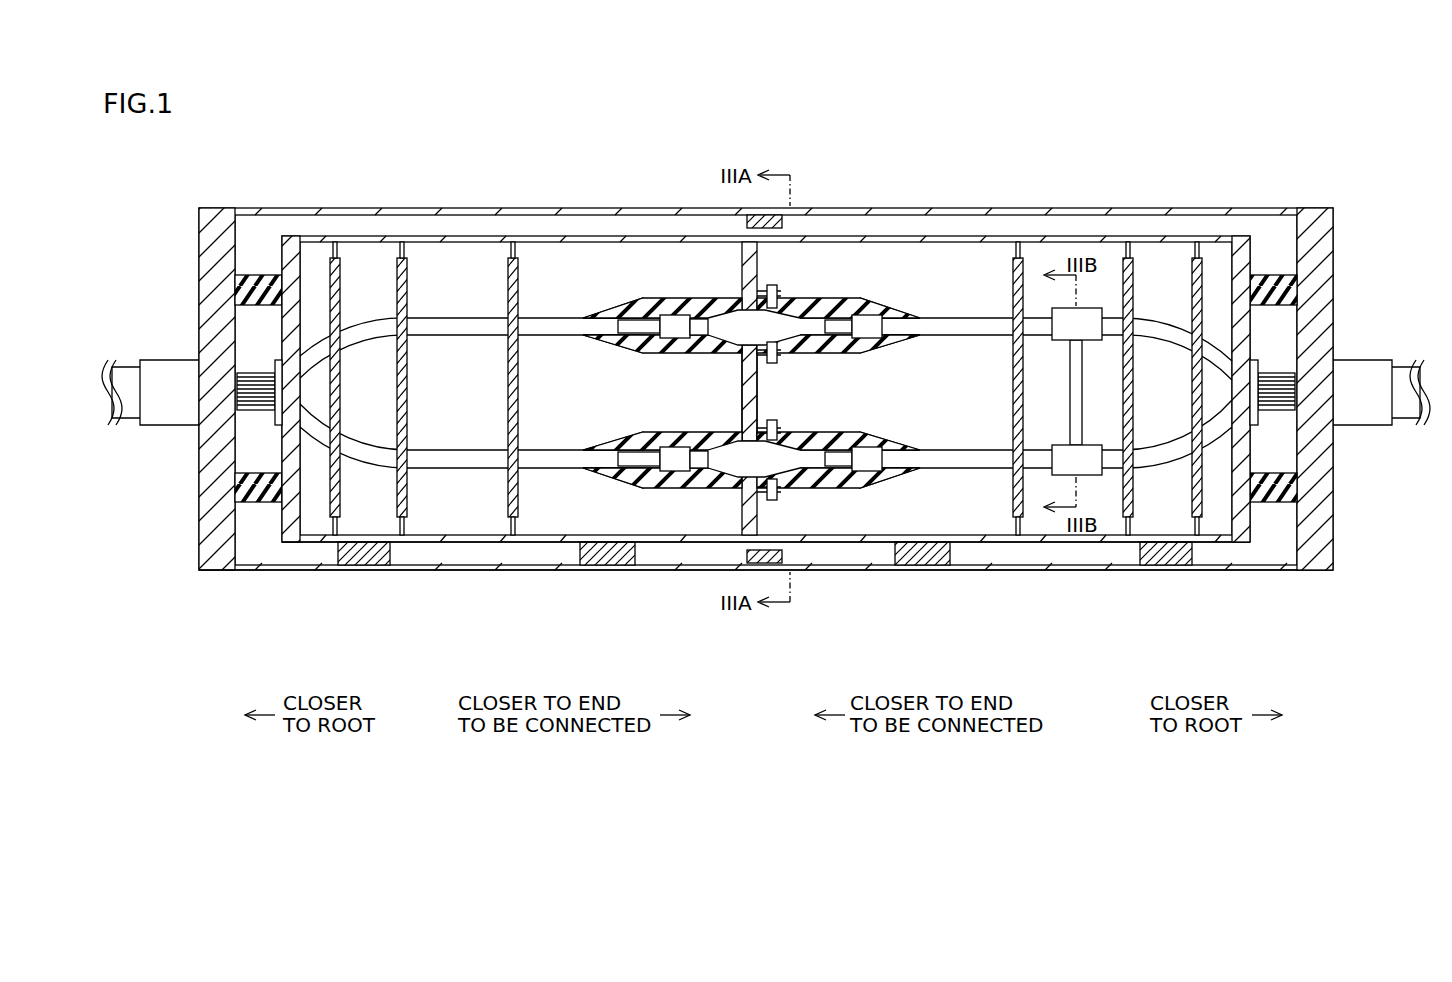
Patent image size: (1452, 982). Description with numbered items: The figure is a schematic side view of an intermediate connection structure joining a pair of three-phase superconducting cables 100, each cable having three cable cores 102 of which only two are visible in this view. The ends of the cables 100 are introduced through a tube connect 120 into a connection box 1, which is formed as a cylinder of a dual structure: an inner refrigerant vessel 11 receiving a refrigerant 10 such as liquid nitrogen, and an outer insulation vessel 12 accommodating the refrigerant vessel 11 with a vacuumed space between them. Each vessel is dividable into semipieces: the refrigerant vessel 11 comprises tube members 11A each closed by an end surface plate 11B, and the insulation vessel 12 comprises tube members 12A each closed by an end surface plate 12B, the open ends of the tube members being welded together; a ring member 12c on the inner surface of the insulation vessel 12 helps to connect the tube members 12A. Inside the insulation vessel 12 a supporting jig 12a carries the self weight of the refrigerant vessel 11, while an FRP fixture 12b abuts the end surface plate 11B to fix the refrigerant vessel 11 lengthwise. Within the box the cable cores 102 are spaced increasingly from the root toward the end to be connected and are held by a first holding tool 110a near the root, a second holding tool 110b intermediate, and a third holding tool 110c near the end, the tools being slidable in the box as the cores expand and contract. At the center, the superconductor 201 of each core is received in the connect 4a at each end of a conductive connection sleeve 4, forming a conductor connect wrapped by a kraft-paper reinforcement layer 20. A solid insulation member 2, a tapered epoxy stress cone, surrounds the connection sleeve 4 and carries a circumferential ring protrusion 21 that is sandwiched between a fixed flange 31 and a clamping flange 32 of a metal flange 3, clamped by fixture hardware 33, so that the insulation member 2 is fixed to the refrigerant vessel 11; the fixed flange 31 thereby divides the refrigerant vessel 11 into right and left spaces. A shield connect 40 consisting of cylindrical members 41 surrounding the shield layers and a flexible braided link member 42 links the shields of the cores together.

The connection box 1 is at (770, 423).
The solid insulation member 2 is at (812, 330).
The metal flange 3 is at (723, 388).
The connection sleeve 4 is at (835, 330).
The connect 4a is at (672, 330).
The refrigerant 10 is at (975, 522).
The refrigerant vessel 11 is at (766, 439).
The tube member 11A is at (1040, 545).
The end surface plate 11B is at (1240, 545).
The insulation vessel 12 is at (770, 403).
The tube member 12A is at (952, 568).
The end surface plate 12B is at (1310, 568).
The supporting jig 12a is at (365, 552).
The fixture 12b is at (257, 275).
The ring member 12c is at (780, 563).
The reinforcement layer 20 is at (647, 320).
The superconductor 201 is at (632, 323).
The circumferential ring protrusion 21 is at (742, 367).
The fixed flange 31 is at (742, 399).
The clamping flange 32 is at (780, 353).
The fixture hardware 33 is at (779, 297).
The shield connect 40 is at (1074, 375).
The cylindrical member 41 is at (1090, 325).
The link member 42 is at (1070, 392).
The superconducting cable 100 is at (118, 392).
The cable core 102 is at (470, 330).
The first holding tool 110a is at (347, 290).
The second holding tool 110b is at (405, 290).
The third holding tool 110c is at (520, 290).
The tube connect 120 is at (170, 392).